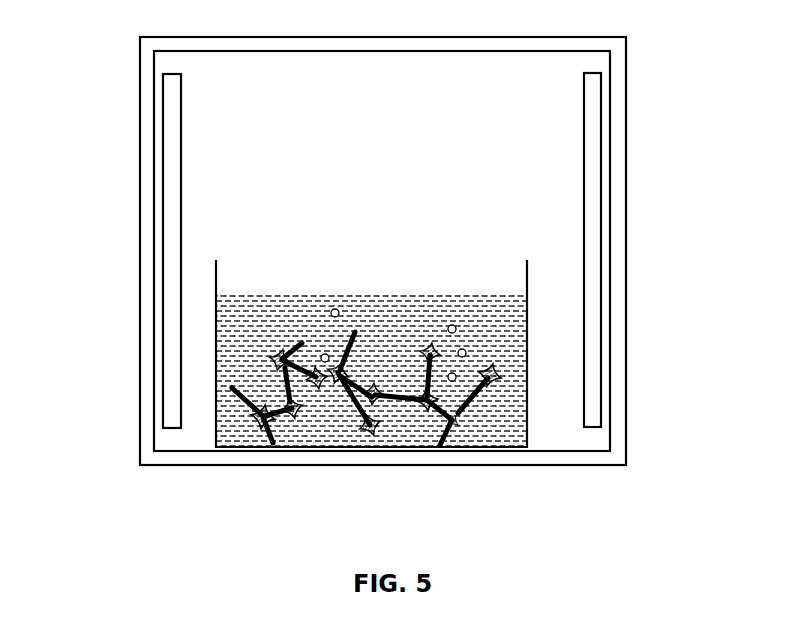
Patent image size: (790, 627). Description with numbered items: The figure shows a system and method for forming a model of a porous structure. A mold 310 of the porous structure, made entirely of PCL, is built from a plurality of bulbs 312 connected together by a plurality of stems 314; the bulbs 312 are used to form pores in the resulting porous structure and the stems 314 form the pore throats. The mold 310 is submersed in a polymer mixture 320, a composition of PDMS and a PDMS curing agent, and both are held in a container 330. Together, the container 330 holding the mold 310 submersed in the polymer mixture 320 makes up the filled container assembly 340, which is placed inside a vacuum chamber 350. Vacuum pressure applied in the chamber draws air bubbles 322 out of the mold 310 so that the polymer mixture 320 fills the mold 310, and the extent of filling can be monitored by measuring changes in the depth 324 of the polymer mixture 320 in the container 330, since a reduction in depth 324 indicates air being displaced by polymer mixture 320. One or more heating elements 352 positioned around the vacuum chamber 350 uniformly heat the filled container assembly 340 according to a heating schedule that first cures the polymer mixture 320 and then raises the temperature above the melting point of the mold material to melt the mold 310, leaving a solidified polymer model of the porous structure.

The mold 310 is at (275, 355).
The bulbs 312 is at (494, 378).
The stems 314 is at (458, 436).
The polymer mixture 320 is at (463, 295).
The air bubbles 322 is at (332, 311).
The depth 324 is at (541, 437).
The container 330 is at (527, 277).
The filled container assembly 340 is at (230, 243).
The vacuum chamber 350 is at (138, 120).
The heating elements 352 is at (167, 80).